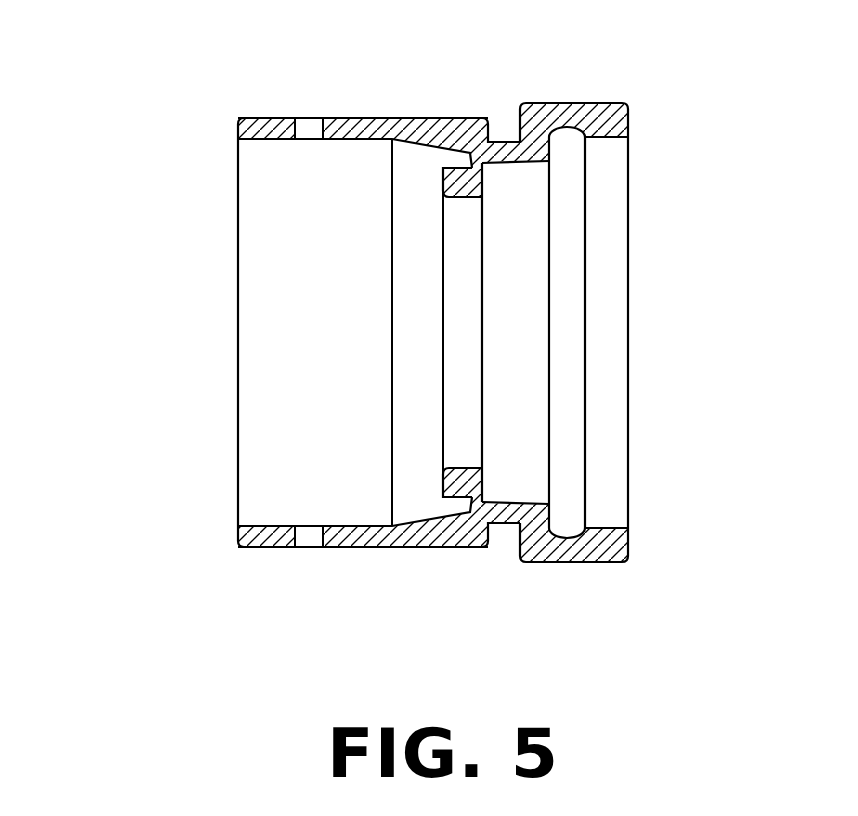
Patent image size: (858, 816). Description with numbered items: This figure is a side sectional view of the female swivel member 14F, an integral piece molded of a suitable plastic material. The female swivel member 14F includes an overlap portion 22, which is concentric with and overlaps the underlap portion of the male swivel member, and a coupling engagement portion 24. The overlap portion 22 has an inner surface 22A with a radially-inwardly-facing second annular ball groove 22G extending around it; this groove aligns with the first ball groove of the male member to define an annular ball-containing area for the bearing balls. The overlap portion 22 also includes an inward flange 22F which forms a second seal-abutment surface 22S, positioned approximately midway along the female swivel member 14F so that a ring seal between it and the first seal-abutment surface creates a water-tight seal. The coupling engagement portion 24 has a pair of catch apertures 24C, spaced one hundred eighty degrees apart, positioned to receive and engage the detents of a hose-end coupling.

The female swivel member 14F is at (724, 107).
The overlap portion 22 is at (542, 115).
The inner surface 22A is at (597, 527).
The inward flange 22F is at (460, 183).
The second annular ball groove 22G is at (573, 298).
The second seal-abutment surface 22S is at (482, 187).
The coupling engagement portion 24 is at (262, 345).
The catch apertures 24C is at (313, 130).